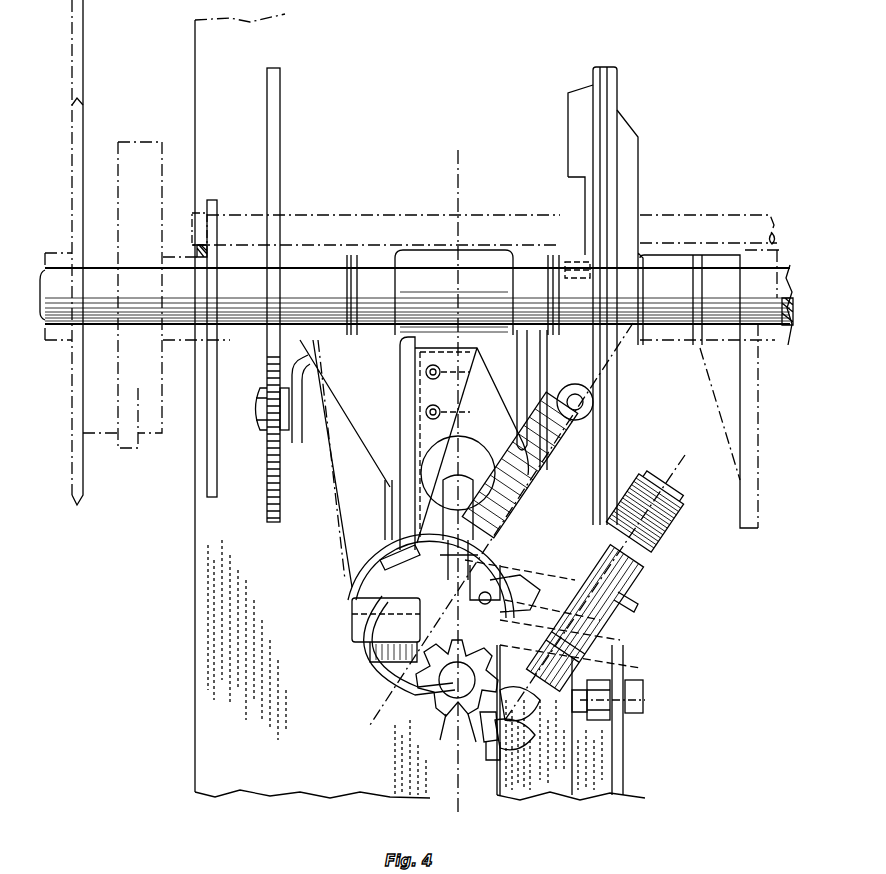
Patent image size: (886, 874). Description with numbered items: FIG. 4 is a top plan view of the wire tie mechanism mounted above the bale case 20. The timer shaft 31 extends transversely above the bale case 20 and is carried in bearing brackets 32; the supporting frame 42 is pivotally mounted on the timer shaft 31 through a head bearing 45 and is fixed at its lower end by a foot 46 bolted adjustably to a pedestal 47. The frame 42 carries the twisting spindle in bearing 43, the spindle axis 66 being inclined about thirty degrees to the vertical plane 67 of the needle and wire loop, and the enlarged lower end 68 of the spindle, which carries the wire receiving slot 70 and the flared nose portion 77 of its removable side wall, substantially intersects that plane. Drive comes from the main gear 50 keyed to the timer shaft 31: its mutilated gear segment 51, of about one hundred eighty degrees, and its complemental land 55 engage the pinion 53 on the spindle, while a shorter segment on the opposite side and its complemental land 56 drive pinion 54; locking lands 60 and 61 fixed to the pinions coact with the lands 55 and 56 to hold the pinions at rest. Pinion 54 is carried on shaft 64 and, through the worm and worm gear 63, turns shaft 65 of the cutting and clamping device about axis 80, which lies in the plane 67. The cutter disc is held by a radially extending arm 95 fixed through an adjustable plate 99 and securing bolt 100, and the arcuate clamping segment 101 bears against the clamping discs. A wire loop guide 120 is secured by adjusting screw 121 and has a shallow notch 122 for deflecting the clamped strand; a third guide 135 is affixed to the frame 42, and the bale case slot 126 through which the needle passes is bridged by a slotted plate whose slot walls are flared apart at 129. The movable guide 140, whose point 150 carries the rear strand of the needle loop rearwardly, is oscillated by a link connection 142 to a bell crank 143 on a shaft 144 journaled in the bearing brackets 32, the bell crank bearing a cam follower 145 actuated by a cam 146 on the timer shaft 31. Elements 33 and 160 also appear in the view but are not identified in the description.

The bale case 20 is at (201, 535).
The timer shaft 31 is at (147, 312).
The bearing brackets 32 is at (207, 473).
The blade 33 is at (132, 447).
The supporting frame 42 is at (382, 382).
The bearing 43 is at (500, 472).
The head bearing 45 is at (372, 258).
The foot 46 is at (608, 682).
The pedestal 47 is at (626, 762).
The main gear 50 is at (617, 90).
The mutilated gear segment 51 is at (577, 130).
The driving pinion 53 is at (568, 392).
The driving pinion 54 is at (676, 522).
The complemental land 55 is at (590, 203).
The complemental land 56 is at (622, 426).
The pinion locking land 60 is at (622, 452).
The pinion locking land 61 is at (652, 548).
The worm and worm gear 63 is at (470, 742).
The shaft 64 is at (486, 762).
The shaft 65 is at (428, 690).
The spindle axis 66 is at (612, 372).
The vertical plane 67 is at (460, 190).
The lower end of spindle 68 is at (492, 540).
The wire receiving and engaging slot 70 is at (462, 537).
The front end of side wall 77 is at (428, 534).
The axis of rotation 80 is at (452, 735).
The radially extending arm 95 is at (340, 608).
The plate 99 is at (338, 636).
The securing bolt 100 is at (372, 556).
The arcuate clamping segment 101 is at (525, 560).
The wire loop guide 120 is at (525, 608).
The adjusting bolt or screw 121 is at (523, 634).
The shallow notch 122 is at (528, 582).
The bale case slot 126 is at (478, 450).
The flared slot walls 129 is at (478, 488).
The third guide 135 is at (388, 482).
The movable guide 140 is at (350, 660).
The link connection 142 is at (342, 528).
The bell crank 143 is at (295, 446).
The shaft 144 is at (337, 222).
The cam follower 145 is at (263, 437).
The cam 146 is at (270, 478).
The point 150 is at (640, 604).
The axis 160 is at (525, 740).